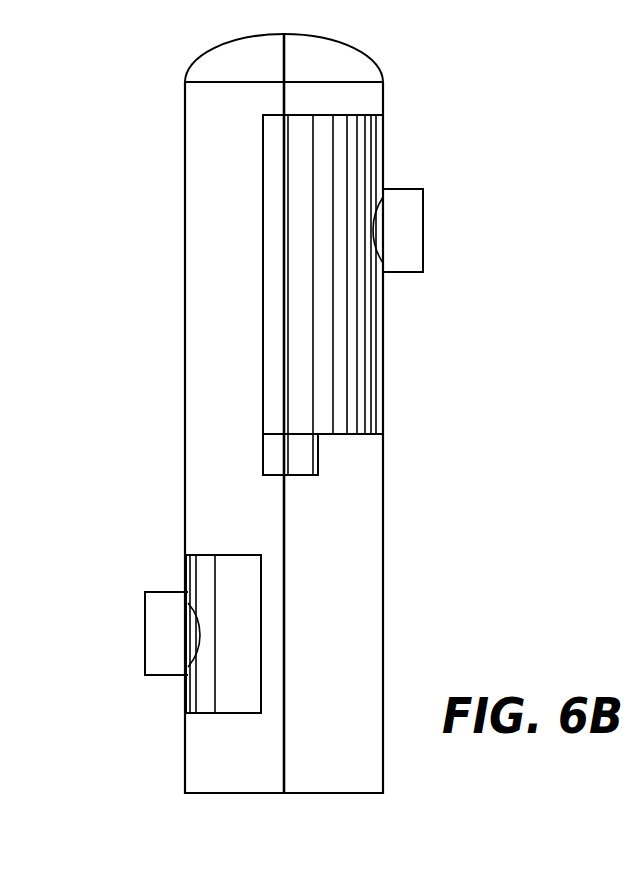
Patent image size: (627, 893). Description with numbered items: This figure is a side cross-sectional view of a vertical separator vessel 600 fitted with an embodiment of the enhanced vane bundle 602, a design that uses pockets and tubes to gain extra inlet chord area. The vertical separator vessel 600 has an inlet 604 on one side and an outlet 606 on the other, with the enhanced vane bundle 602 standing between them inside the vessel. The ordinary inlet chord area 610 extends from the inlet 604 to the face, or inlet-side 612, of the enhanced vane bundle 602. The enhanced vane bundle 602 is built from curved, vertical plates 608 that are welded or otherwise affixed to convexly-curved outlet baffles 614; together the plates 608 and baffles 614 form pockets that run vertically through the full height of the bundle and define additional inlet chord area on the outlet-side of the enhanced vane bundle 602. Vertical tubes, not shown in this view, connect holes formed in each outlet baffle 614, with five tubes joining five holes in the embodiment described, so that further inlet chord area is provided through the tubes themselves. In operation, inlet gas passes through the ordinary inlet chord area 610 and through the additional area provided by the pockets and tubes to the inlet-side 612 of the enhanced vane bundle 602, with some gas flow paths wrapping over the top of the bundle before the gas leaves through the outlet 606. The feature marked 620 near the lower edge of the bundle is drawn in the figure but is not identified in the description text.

The vertical separator vessel 600 is at (103, 82).
The enhanced vane bundle 602 is at (263, 298).
The inlet 604 is at (145, 637).
The outlet 606 is at (405, 192).
The curved, vertical plates 608 is at (350, 320).
The ordinary inlet chord area 610 is at (203, 413).
The inlet-side 612 is at (212, 178).
The convexly-curved outlet baffles 614 is at (337, 115).
The panel bottom edge 620 is at (352, 425).